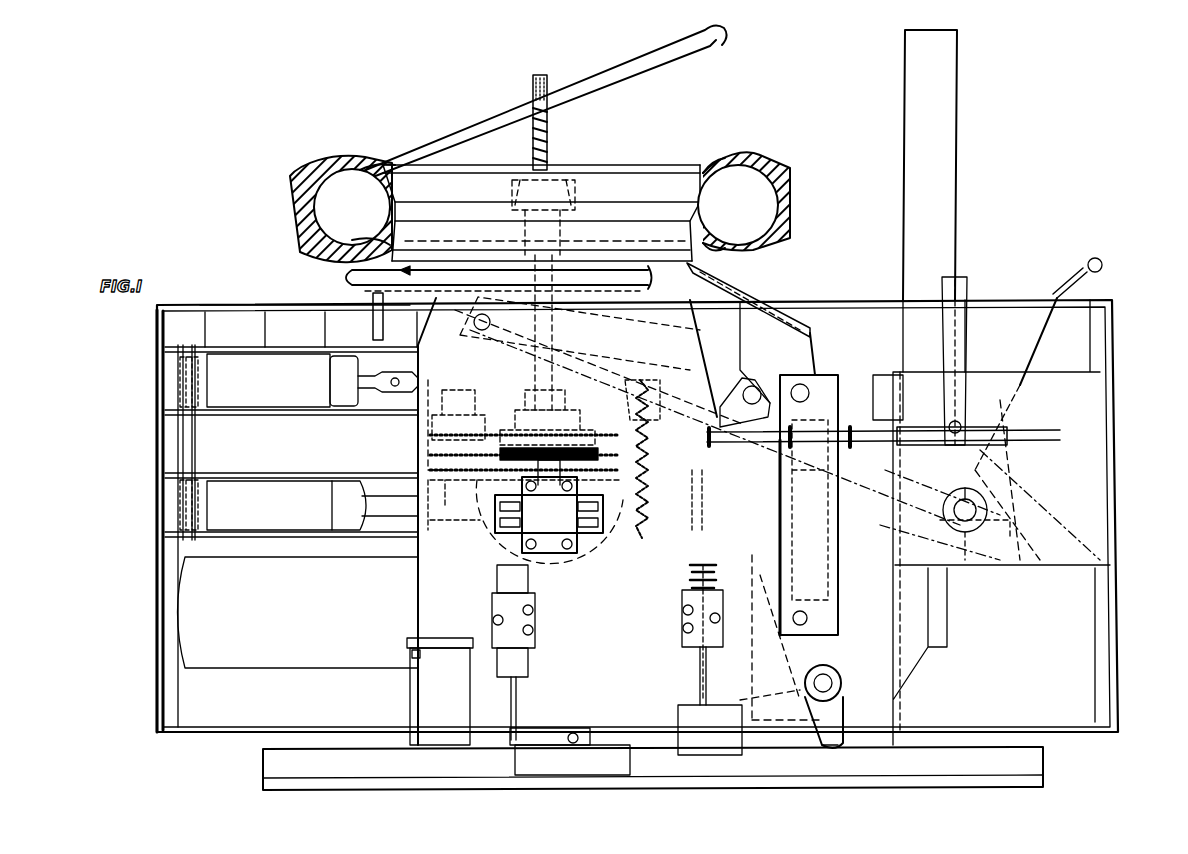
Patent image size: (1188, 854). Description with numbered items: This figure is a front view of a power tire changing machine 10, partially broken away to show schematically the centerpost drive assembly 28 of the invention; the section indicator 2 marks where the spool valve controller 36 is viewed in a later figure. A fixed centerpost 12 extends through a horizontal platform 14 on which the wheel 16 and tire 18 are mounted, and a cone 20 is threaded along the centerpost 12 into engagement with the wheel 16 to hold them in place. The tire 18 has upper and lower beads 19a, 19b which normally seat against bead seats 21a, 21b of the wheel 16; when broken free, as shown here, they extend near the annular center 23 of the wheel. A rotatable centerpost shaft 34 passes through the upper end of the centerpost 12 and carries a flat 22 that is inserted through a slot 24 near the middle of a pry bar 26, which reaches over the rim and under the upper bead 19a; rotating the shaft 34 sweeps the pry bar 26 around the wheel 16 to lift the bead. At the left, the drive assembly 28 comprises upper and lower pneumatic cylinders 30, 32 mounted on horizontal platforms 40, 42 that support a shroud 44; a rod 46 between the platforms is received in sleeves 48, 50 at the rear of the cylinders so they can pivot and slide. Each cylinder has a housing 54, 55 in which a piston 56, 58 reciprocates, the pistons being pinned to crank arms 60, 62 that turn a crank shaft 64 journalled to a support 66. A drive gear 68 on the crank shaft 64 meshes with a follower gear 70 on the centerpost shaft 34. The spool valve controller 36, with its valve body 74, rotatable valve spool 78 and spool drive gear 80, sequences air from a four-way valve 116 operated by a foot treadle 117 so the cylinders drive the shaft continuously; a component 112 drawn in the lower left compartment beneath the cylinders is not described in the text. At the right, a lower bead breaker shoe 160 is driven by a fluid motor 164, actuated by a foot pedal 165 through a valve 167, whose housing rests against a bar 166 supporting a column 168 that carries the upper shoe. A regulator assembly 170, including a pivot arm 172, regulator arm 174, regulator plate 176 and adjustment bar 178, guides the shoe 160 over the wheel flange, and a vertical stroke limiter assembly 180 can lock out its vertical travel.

The power tire changing machine 10 is at (268, 238).
The fixed centerpost 12 is at (555, 143).
The horizontal platform 14 is at (345, 278).
The wheel 16 is at (662, 168).
The tire 18 is at (790, 178).
The upper tire bead 19a is at (372, 160).
The lower tire bead 19b is at (775, 222).
The cone 20 is at (585, 190).
The upper bead seat 21a is at (705, 162).
The lower bead seat 21b is at (735, 258).
The flat 22 is at (533, 78).
The annular center of the wheel 23 is at (700, 208).
The slot 24 is at (560, 88).
The pry bar 26 is at (645, 72).
The centerpost drive assembly 28 is at (385, 700).
The upper pneumatic cylinder 30 is at (232, 355).
The lower pneumatic cylinder 32 is at (240, 535).
The centerpost shaft 34 is at (575, 323).
The spool valve controller 36 is at (582, 548).
The upper horizontal platform 40 is at (160, 425).
The lower horizontal platform 42 is at (290, 535).
The shroud 44 is at (156, 567).
The rod 46 is at (197, 445).
The upper cylinder sleeve 48 is at (178, 378).
The lower cylinder sleeve 50 is at (178, 500).
The upper cylinder housing 54 is at (292, 396).
The lower cylinder housing 55 is at (292, 516).
The upper piston 56 is at (364, 366).
The lower piston 58 is at (377, 500).
The upper crank arm 60 is at (426, 382).
The lower crank arm 62 is at (454, 514).
The crank shaft 64 is at (459, 394).
The support 66 is at (495, 414).
The drive gear 68 is at (412, 440).
The follower gear 70 is at (628, 392).
The valve body 74 is at (600, 508).
The valve spool 78 is at (549, 540).
The spool drive gear 80 is at (580, 478).
The reservoir 112 is at (233, 655).
The four-way valve 116 is at (537, 620).
The foot treadle 117 is at (595, 745).
The lower bead breaker shoe 160 is at (812, 338).
The fluid motor 164 is at (802, 722).
The foot pedal 165 is at (722, 745).
The bar 166 is at (845, 683).
The valve 167 is at (683, 628).
The column 168 is at (958, 195).
The regulator assembly 170 is at (700, 468).
The pivot arm 172 is at (590, 352).
The regulator arm 174 is at (760, 465).
The regulator plate 176 is at (1078, 492).
The adjustment bar 178 is at (1040, 392).
The vertical stroke limiter assembly 180 is at (762, 608).
The section line 2 is at (495, 545).